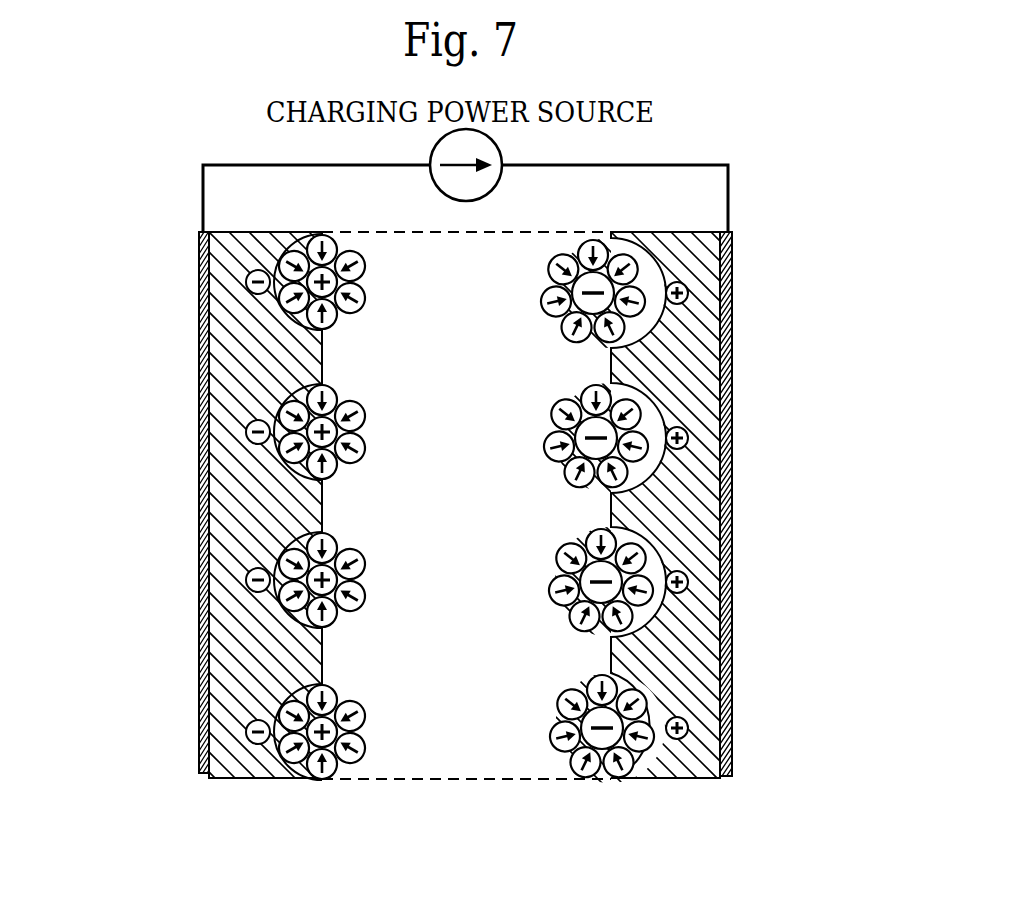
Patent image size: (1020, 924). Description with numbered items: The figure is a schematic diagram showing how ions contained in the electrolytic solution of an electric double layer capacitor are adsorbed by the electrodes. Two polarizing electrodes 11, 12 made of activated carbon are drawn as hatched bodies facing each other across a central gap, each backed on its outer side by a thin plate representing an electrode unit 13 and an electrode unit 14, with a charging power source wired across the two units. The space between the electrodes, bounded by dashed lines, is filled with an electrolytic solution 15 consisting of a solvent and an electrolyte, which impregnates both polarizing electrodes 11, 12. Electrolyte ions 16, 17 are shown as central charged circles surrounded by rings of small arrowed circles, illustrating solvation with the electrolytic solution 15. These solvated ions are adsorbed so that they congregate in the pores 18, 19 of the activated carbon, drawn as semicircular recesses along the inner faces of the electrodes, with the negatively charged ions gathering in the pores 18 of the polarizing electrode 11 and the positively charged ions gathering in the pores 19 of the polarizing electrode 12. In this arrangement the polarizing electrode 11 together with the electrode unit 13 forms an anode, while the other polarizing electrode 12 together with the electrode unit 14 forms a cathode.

The polarizing electrode 11 is at (688, 322).
The polarizing electrode 12 is at (246, 368).
The electrode unit 13 is at (732, 345).
The electrode unit 14 is at (200, 479).
The electrolytic solution 15 is at (462, 705).
The electrolyte ion 16 is at (676, 367).
The electrolyte ion 17 is at (296, 300).
The pore 18 is at (647, 277).
The pore 19 is at (305, 238).